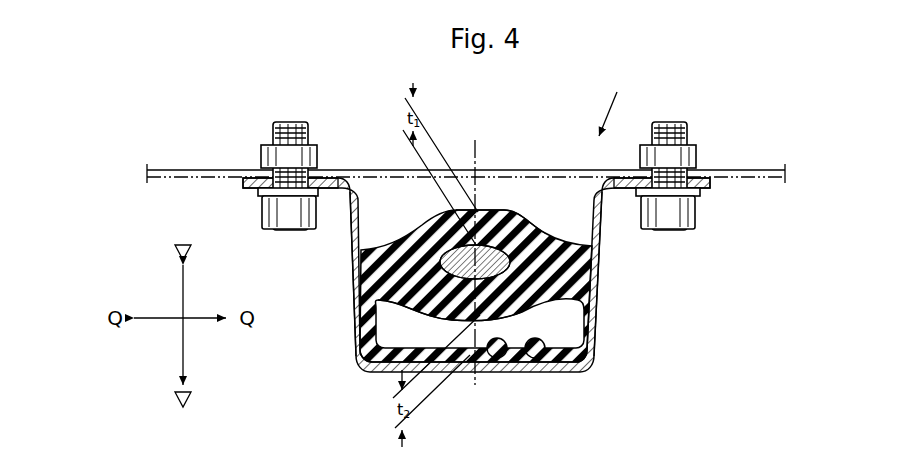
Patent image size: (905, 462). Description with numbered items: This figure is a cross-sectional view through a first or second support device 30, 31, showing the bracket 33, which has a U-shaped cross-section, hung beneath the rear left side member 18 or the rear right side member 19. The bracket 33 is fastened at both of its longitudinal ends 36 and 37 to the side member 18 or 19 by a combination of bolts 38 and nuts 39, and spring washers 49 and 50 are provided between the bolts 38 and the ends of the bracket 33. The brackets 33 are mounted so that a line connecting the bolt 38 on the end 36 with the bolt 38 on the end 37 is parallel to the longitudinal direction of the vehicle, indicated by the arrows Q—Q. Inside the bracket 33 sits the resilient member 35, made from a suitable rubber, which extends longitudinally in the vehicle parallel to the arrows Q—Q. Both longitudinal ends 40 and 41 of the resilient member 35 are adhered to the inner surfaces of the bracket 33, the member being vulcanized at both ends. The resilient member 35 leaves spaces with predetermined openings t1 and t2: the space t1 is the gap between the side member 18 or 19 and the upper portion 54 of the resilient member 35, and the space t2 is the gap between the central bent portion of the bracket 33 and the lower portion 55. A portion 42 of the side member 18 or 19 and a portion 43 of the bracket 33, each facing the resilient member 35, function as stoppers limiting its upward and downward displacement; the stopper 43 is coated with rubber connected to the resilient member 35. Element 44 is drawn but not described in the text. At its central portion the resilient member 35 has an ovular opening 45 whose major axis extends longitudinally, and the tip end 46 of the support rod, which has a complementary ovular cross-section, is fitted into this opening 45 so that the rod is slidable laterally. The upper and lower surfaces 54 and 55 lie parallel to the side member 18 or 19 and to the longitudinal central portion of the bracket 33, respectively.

The rear left side member 18 is at (482, 143).
The rear right side member 19 is at (753, 170).
The first support device 30 is at (625, 101).
The second support device 31 is at (608, 114).
The bracket 33 is at (597, 322).
The resilient member 35 is at (370, 240).
The longitudinal end of the bracket 36 is at (520, 216).
The longitudinal end of the bracket 37 is at (248, 188).
The bolt 38 is at (280, 230).
The nut 39 is at (306, 145).
The longitudinal end of the resilient member 40 is at (598, 290).
The longitudinal end of the resilient member 41 is at (360, 282).
The portion of the side member 42 is at (486, 176).
The portion of the bracket 43 is at (497, 360).
The projection 44 is at (538, 352).
The ovular opening 45 is at (430, 318).
The tip end of the support rod 46 is at (535, 240).
The spring washer 49 is at (697, 196).
The spring washer 50 is at (263, 196).
The upper portion 54 is at (452, 212).
The lower portion 55 is at (466, 310).